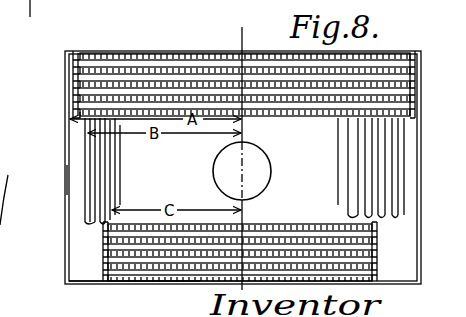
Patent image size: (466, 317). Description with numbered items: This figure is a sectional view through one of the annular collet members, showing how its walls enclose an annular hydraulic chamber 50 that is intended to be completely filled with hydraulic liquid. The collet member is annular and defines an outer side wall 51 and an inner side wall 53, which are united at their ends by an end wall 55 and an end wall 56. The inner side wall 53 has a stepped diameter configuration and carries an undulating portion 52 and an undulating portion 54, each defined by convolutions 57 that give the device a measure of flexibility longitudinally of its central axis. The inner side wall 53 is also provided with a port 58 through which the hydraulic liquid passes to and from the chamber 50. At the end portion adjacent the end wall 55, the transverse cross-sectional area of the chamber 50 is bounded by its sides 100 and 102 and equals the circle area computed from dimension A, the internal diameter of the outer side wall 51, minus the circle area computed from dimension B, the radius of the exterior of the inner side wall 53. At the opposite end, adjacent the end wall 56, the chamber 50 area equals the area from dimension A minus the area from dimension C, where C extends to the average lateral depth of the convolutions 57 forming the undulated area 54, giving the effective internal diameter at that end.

The annular hydraulic chamber 50 is at (71, 244).
The outer side wall 51 is at (67, 158).
The undulating portion 52 is at (131, 62).
The inner side wall 53 is at (90, 158).
The undulating portion 54 is at (147, 273).
The end wall 55 is at (78, 52).
The end wall 56 is at (84, 283).
The convolutions 57 is at (72, 78).
The port 58 is at (268, 181).
The side of the chamber 100 is at (72, 180).
The side of the chamber 102 is at (86, 197).